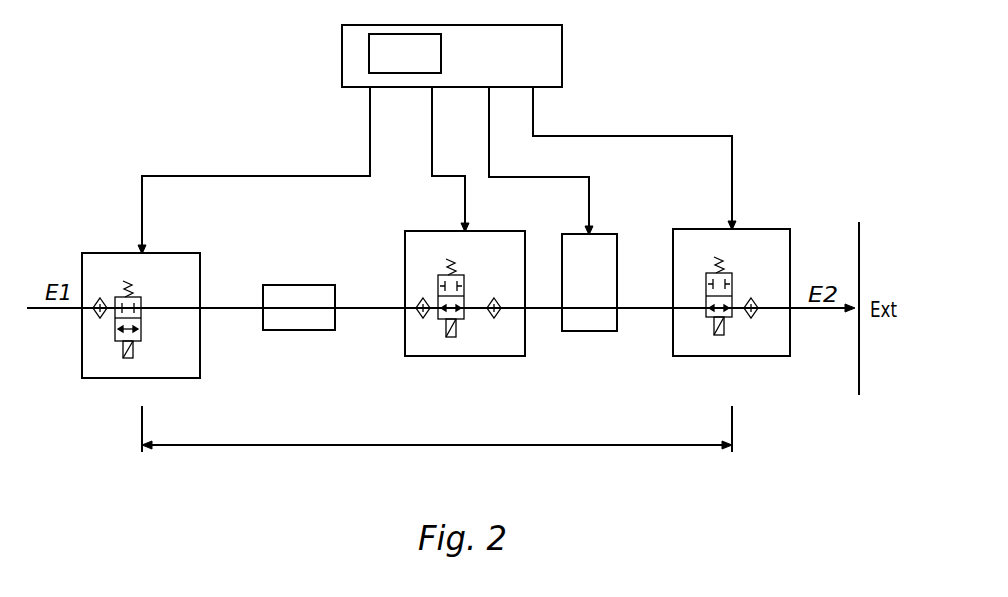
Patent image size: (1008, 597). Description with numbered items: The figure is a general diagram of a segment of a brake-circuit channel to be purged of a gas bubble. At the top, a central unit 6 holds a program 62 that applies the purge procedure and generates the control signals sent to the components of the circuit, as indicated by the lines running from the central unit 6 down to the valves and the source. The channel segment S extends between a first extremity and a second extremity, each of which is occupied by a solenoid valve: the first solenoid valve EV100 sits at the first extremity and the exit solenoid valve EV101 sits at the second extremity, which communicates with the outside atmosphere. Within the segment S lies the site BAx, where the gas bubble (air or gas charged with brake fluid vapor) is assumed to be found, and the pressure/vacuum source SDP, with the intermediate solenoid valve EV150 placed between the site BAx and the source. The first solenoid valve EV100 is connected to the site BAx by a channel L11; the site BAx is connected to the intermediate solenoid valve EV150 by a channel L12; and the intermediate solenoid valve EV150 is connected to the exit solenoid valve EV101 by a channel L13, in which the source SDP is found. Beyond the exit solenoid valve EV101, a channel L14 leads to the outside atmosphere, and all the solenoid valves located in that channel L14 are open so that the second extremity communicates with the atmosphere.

The central unit 6 is at (518, 66).
The program 62 is at (405, 53).
The first solenoid valve EV100 is at (141, 315).
The intermediate solenoid valve EV150 is at (465, 293).
The exit solenoid valve EV101 is at (731, 292).
The site BAx is at (299, 307).
The pressure/vacuum source SDP is at (589, 282).
The channel L11 is at (222, 310).
The channel L12 is at (353, 310).
The channel L13 is at (535, 310).
The channel L14 is at (808, 310).
The channel segment S is at (437, 429).